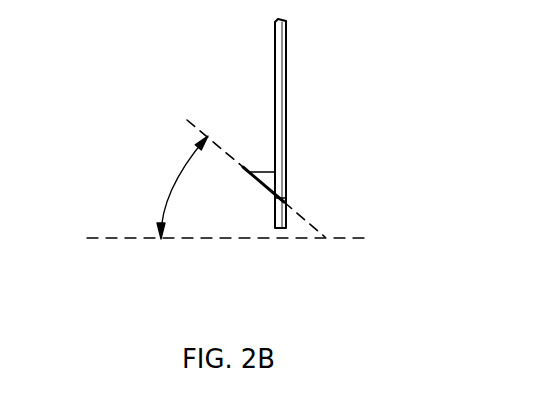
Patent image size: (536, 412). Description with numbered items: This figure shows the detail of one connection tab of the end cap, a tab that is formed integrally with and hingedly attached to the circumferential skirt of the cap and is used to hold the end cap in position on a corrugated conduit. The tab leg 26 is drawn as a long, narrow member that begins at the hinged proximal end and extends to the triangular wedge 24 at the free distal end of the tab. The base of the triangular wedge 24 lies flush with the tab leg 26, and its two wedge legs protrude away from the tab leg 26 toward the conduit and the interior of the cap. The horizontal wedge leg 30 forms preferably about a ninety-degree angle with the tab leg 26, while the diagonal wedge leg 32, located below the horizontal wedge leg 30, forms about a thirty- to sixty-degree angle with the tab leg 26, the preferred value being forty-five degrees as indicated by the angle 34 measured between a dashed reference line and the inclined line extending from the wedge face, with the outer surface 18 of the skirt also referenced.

The outer surface 18 is at (290, 223).
The triangular wedge 24 is at (266, 181).
The tab leg 26 is at (292, 42).
The horizontal wedge leg 30 is at (268, 172).
The diagonal wedge leg 32 is at (263, 182).
The angle 34 is at (171, 186).